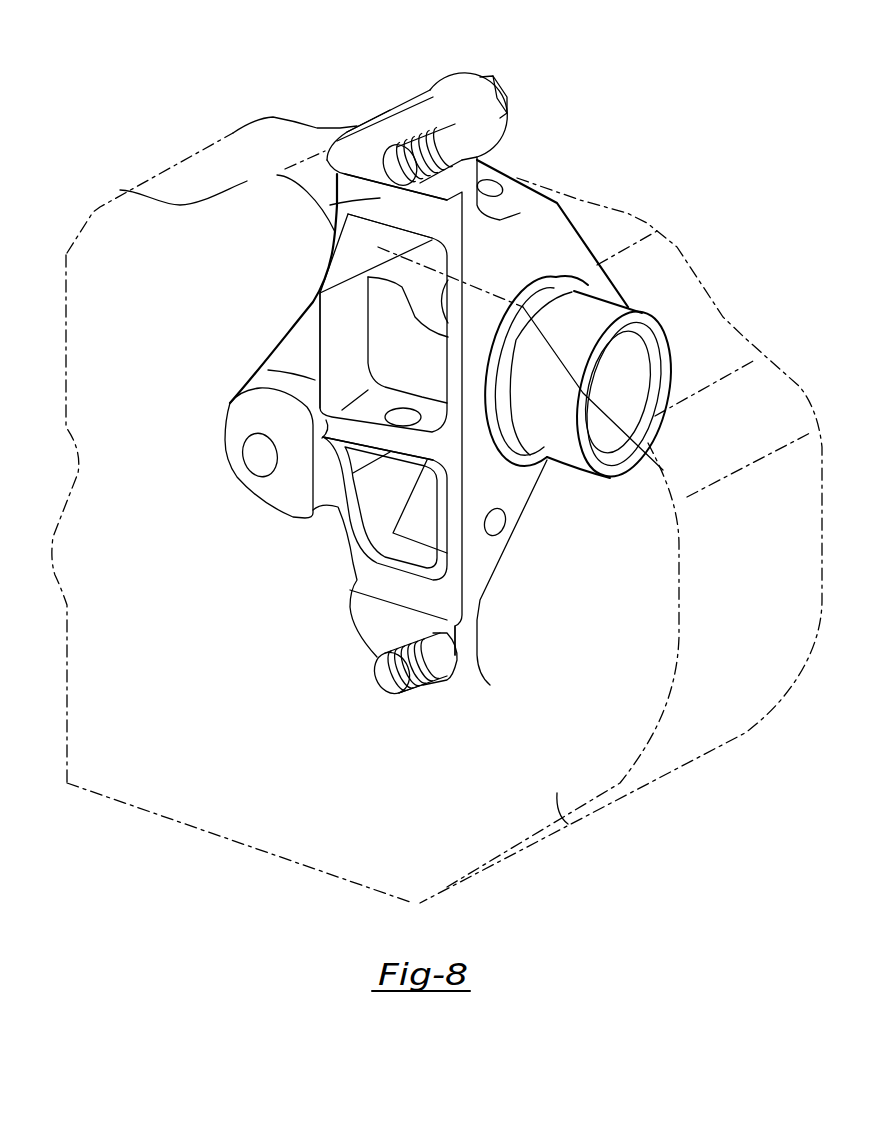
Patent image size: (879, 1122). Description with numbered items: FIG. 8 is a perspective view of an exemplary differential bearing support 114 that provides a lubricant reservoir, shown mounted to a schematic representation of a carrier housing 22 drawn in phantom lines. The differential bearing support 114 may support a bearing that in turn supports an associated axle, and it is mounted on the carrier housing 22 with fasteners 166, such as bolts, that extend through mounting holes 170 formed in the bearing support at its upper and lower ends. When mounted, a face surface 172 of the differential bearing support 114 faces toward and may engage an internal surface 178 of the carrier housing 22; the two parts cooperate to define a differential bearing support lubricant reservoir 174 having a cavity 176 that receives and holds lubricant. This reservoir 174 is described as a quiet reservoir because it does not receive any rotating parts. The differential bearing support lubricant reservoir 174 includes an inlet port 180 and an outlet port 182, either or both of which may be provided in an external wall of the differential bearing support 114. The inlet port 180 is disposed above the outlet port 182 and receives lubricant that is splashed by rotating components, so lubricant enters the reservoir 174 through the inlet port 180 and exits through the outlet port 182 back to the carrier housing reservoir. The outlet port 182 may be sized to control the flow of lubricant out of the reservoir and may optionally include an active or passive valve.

The carrier housing 22 is at (663, 297).
The differential bearing support 114 is at (577, 227).
The fasteners 166 is at (490, 87).
The mounting holes 170 is at (433, 87).
The face surface 172 is at (277, 175).
The differential bearing support lubricant reservoir 174 is at (345, 337).
The cavity 176 is at (412, 343).
The internal surface 178 is at (570, 827).
The inlet port 180 is at (483, 190).
The outlet port 182 is at (505, 513).